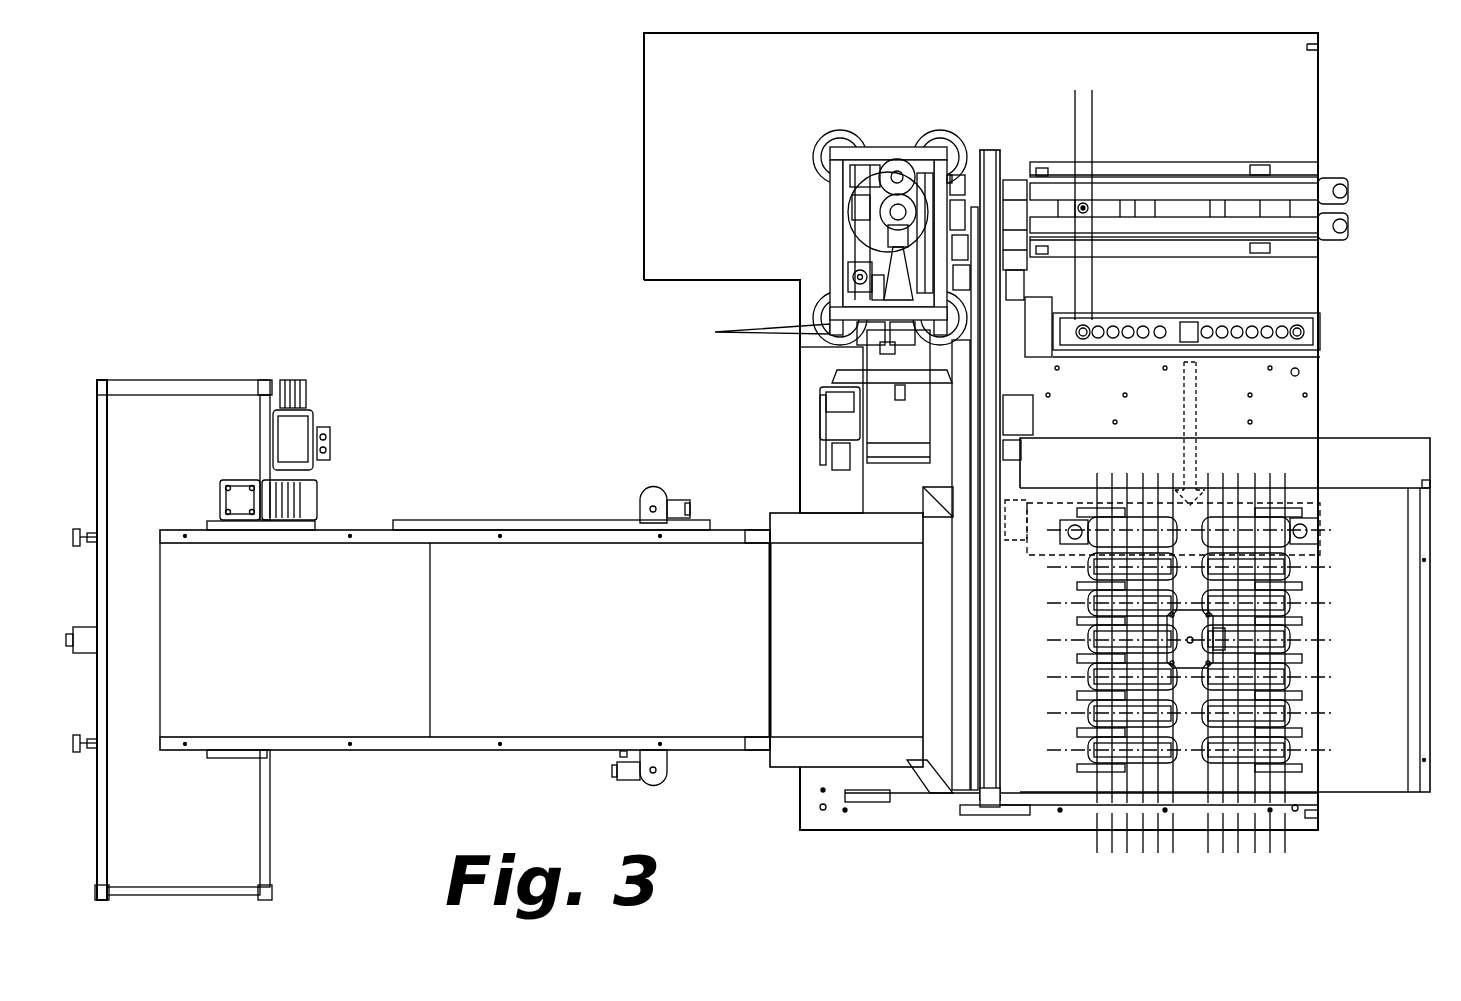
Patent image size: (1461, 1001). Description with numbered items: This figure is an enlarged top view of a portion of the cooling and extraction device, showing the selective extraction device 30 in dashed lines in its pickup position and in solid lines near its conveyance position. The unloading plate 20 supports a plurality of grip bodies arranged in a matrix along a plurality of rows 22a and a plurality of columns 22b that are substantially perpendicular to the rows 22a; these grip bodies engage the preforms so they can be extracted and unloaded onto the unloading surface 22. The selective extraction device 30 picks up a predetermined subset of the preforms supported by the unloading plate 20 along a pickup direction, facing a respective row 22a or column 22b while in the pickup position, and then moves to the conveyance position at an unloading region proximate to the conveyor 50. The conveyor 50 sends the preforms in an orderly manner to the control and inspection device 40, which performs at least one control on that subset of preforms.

The unloading plate 20 is at (1313, 647).
The unloading surface 22 is at (1355, 762).
The rows 22a is at (1343, 530).
The columns 22b is at (1238, 478).
The selective extraction device 30 is at (1295, 300).
The control and inspection device 40 is at (805, 167).
The conveyor 50 is at (1100, 142).